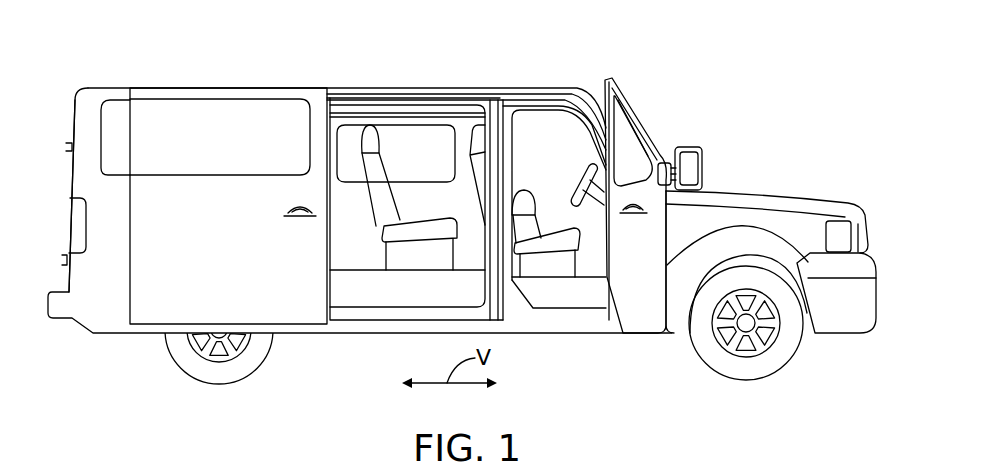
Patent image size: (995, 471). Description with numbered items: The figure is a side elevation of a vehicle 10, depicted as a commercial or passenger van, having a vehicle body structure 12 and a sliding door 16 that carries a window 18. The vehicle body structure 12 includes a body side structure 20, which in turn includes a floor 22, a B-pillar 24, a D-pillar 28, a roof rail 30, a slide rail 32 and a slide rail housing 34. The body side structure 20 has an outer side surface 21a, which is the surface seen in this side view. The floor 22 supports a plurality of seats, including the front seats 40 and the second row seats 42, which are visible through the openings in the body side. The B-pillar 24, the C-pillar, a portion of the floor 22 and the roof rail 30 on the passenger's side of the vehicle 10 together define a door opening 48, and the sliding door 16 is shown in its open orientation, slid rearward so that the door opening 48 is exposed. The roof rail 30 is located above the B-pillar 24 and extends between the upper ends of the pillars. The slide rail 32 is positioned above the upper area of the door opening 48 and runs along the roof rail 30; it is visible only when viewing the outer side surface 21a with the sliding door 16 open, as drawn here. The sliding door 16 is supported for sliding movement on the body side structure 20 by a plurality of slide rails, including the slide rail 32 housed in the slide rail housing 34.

The vehicle 10 is at (184, 49).
The vehicle body structure 12 is at (462, 87).
The sliding door 16 is at (152, 300).
The window 18 is at (257, 130).
The body side structure 20 is at (355, 334).
The outer side surface 21a is at (692, 224).
The floor 22 is at (354, 268).
The B-pillar 24 is at (508, 210).
The D-pillar 28 is at (97, 187).
The roof rail 30 is at (372, 93).
The slide rail 32 is at (422, 108).
The slide rail housing 34 is at (403, 117).
The front seats 40 is at (547, 242).
The second row seats 42 is at (427, 232).
The door opening 48 is at (484, 212).